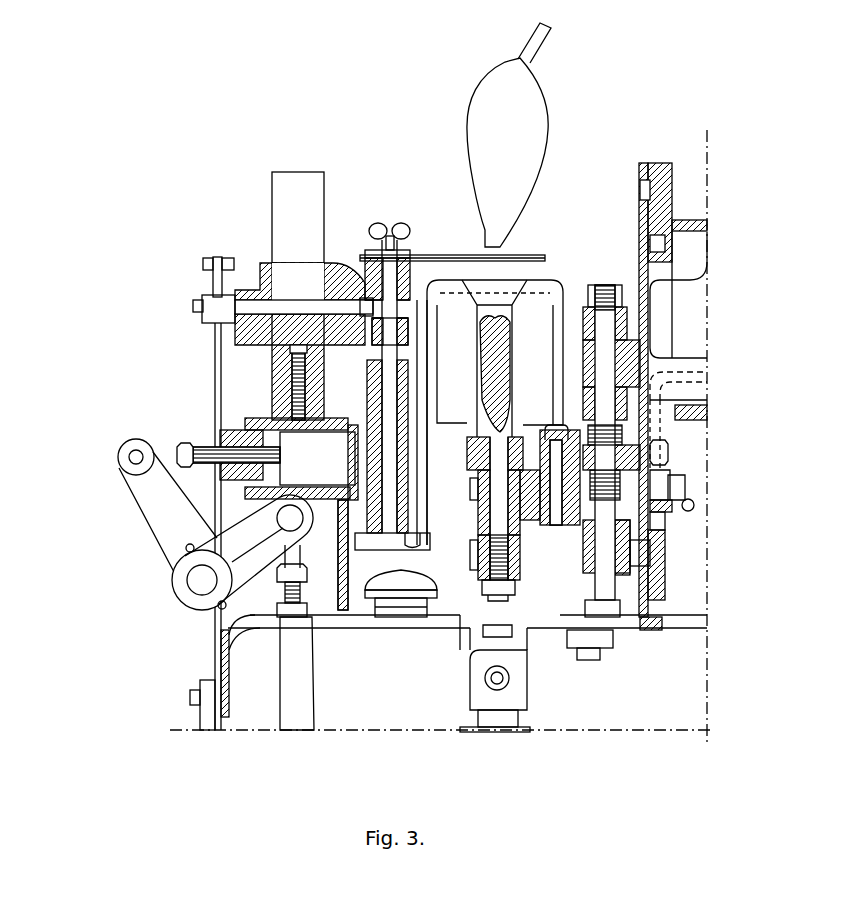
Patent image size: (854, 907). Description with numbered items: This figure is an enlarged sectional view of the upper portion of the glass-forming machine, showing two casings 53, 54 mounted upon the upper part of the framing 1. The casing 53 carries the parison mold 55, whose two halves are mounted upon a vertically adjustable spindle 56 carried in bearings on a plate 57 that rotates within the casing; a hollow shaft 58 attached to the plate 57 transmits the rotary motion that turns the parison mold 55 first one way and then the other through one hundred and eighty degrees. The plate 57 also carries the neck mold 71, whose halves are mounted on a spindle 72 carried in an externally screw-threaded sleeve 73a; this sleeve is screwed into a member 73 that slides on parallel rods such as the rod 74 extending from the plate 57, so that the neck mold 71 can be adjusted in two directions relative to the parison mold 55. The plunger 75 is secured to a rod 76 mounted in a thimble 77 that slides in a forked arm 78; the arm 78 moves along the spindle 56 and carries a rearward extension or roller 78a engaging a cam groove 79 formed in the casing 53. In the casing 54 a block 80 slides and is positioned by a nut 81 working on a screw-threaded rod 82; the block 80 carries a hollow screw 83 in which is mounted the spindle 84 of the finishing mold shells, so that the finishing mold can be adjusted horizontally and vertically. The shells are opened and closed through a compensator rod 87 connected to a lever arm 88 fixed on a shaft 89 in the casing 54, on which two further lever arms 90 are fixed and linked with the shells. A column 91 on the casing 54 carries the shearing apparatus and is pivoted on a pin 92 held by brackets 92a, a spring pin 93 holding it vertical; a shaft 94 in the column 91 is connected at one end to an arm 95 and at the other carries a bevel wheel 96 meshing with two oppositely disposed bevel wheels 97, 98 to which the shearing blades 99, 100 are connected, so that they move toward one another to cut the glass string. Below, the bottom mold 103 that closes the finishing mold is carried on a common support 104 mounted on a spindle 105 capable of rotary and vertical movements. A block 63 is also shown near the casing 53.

The framing 1 is at (225, 662).
The casing 53 is at (688, 220).
The casing 54 is at (338, 553).
The parison mold 55 is at (495, 412).
The spindle 56 is at (605, 325).
The plate 57 is at (640, 262).
The hollow shaft 58 is at (700, 368).
The block 63 is at (694, 420).
The neck mold 71 is at (467, 455).
The spindle 72 is at (668, 455).
The member 73 is at (553, 472).
The screw-threaded sleeve 73a is at (556, 540).
The rod 74 is at (470, 495).
The plunger 75 is at (503, 432).
The rod 76 is at (497, 505).
The thimble 77 is at (478, 568).
The forked arm 78 is at (527, 568).
The rearward extension or roller 78a is at (650, 552).
The cam groove 79 is at (660, 168).
The block 80 is at (301, 459).
The nut 81 is at (238, 430).
The screw-threaded rod 82 is at (274, 457).
The hollow screw 83 is at (352, 485).
The spindle 84 is at (390, 537).
The compensator rod 87 is at (302, 684).
The lever arm 88 is at (242, 556).
The shaft 89 is at (204, 578).
The lever arm 90 is at (167, 505).
The column 91 is at (298, 236).
The pin 92 is at (301, 330).
The bracket 92a is at (272, 378).
The spring pin 93 is at (306, 372).
The shaft 94 is at (268, 305).
The arm 95 is at (203, 290).
The bevel wheel 96 is at (368, 280).
The bevel wheel 97 is at (402, 257).
The bevel wheel 98 is at (400, 332).
The shearing blade 99 is at (546, 259).
The shearing blade 100 is at (508, 256).
The bottom mold 103 is at (401, 585).
The common support 104 is at (581, 648).
The spindle 105 is at (500, 718).